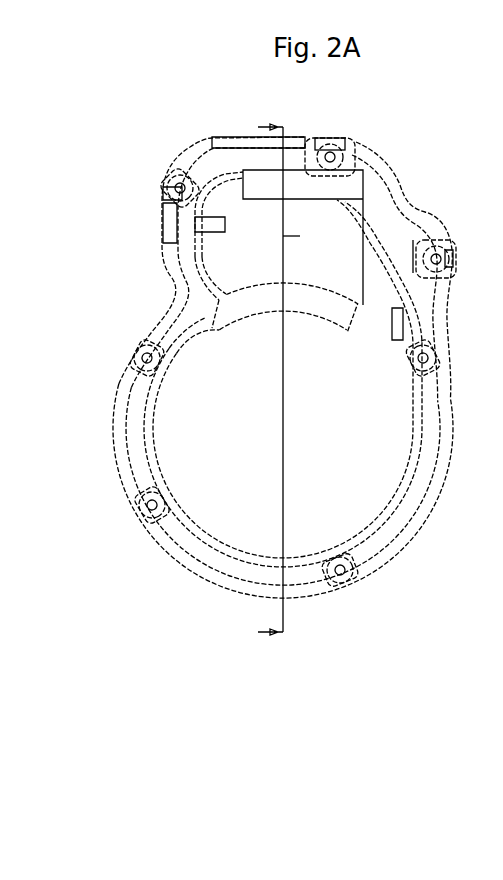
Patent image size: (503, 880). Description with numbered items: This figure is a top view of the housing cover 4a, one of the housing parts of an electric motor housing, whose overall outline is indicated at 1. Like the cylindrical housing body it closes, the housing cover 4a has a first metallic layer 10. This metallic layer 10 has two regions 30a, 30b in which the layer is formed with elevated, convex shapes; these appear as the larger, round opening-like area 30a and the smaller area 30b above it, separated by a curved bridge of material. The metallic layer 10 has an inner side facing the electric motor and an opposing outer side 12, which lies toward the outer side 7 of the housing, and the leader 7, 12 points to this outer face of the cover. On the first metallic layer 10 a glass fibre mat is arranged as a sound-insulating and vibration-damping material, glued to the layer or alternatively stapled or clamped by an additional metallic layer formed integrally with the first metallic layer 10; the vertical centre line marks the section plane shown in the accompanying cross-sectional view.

The frame / housing 1 is at (377, 173).
The first metallic layer 10 is at (137, 427).
The housing cover 4a is at (183, 535).
The outer side 7 is at (297, 421).
The outer side 12 is at (403, 520).
The region 30a is at (345, 435).
The region 30b is at (345, 268).